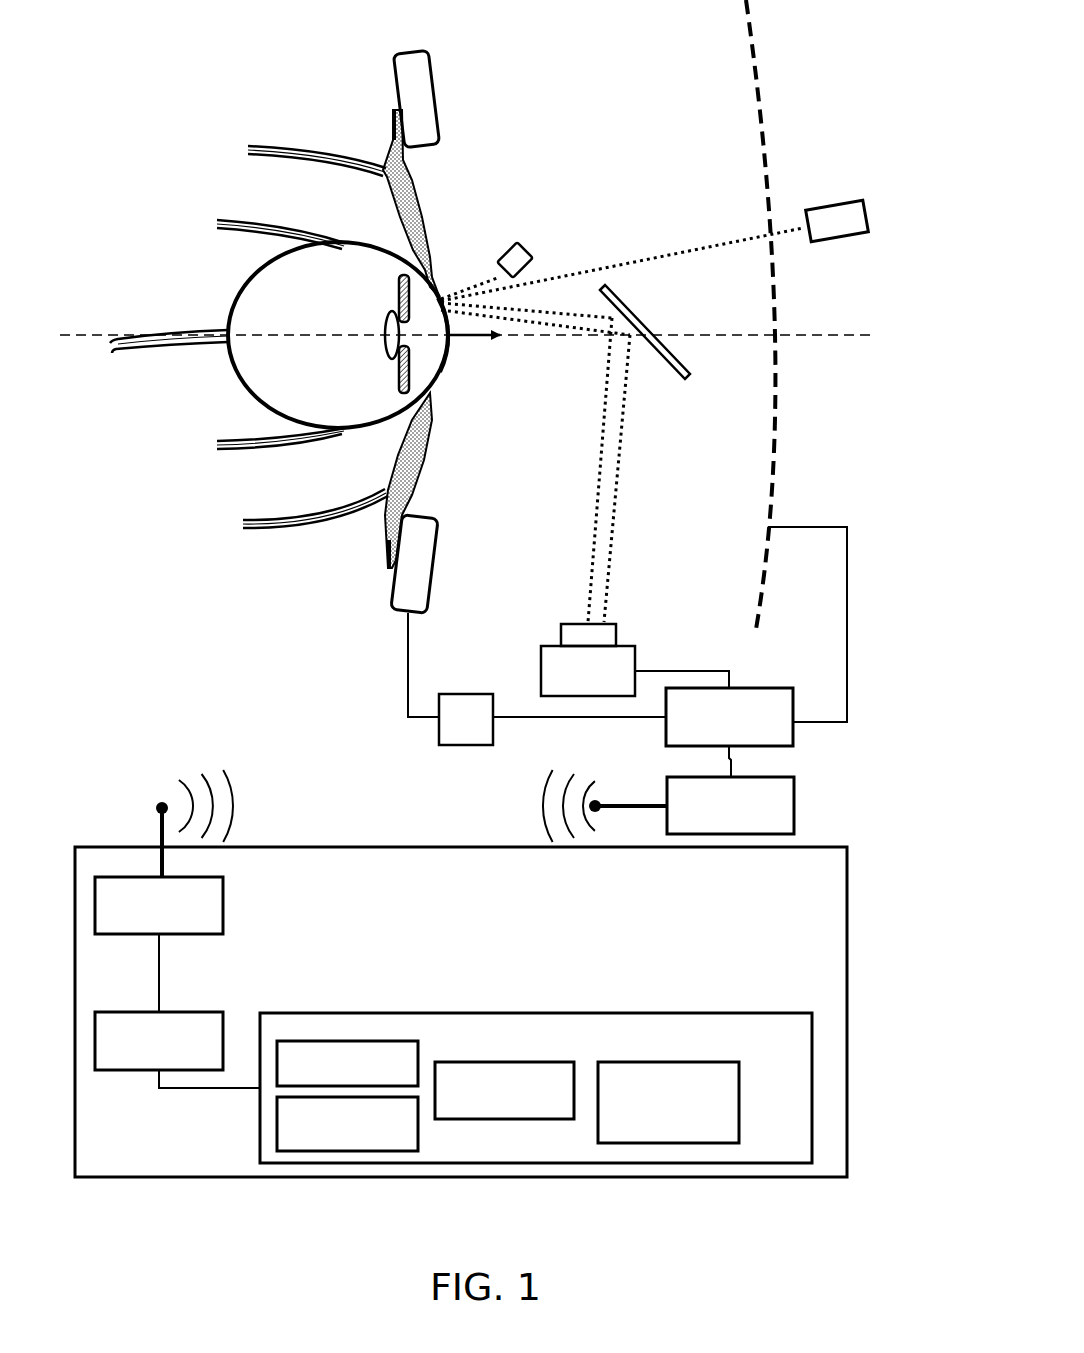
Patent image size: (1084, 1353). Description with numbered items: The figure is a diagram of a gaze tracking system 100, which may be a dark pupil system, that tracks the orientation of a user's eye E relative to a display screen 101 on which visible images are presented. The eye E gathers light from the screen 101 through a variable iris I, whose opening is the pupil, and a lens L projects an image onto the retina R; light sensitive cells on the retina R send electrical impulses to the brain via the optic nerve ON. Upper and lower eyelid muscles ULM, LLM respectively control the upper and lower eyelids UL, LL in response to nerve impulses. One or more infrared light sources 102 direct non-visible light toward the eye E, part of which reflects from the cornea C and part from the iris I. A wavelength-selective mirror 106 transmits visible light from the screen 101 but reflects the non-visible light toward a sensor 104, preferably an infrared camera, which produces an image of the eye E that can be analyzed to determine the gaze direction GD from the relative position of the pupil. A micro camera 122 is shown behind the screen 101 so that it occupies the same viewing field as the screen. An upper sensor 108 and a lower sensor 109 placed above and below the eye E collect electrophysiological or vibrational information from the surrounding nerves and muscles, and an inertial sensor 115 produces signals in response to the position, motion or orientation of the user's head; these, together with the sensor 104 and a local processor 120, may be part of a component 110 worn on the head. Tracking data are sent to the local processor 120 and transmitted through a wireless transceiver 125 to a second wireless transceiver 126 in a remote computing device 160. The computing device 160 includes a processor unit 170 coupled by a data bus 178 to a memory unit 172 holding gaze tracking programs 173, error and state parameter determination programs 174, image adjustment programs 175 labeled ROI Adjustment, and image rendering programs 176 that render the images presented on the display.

The gaze tracking system 100 is at (457, 1229).
The display screen 101 is at (770, 137).
The infrared light source 102 is at (524, 252).
The sensor 104 is at (540, 677).
The wavelength-selective mirror 106 is at (618, 305).
The upper sensor 108 is at (431, 77).
The lower sensor 109 is at (437, 548).
The component worn on the user's head 110 is at (807, 613).
The inertial sensor 115 is at (438, 738).
The local processor 120 is at (794, 737).
The micro camera 122 is at (866, 206).
The wireless transceiver 125 is at (795, 797).
The second wireless transceiver 126 is at (223, 882).
The remote computing device 160 is at (315, 845).
The processor unit 170 is at (203, 1003).
The memory unit 172 is at (573, 1012).
The gaze tracking programs 173 is at (338, 1042).
The error and state parameter determination programs 174 is at (420, 1125).
The image adjustment programs 175 is at (458, 1062).
The image rendering programs 176 is at (730, 1062).
The data bus 178 is at (182, 1090).
The eye E is at (234, 299).
The retina R is at (243, 372).
The optic nerve ON is at (126, 347).
The lens L is at (382, 347).
The variable iris I is at (395, 297).
The cornea C is at (437, 380).
The gaze direction GD is at (478, 345).
The upper eyelid UL is at (422, 192).
The lower eyelid LL is at (427, 427).
The upper eyelid muscle ULM is at (272, 145).
The lower eyelid muscle LLM is at (260, 533).